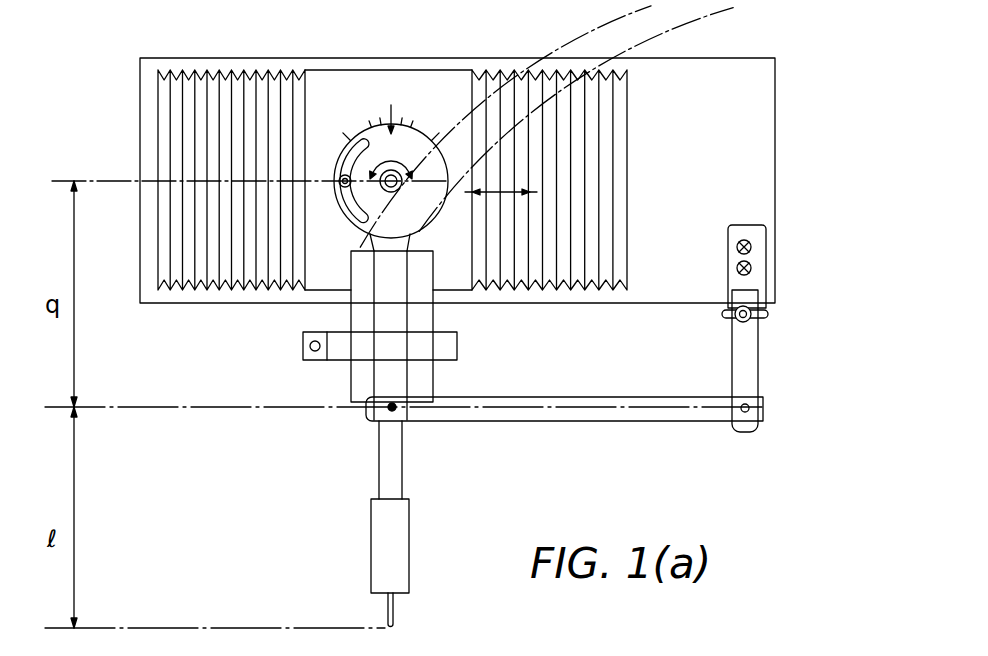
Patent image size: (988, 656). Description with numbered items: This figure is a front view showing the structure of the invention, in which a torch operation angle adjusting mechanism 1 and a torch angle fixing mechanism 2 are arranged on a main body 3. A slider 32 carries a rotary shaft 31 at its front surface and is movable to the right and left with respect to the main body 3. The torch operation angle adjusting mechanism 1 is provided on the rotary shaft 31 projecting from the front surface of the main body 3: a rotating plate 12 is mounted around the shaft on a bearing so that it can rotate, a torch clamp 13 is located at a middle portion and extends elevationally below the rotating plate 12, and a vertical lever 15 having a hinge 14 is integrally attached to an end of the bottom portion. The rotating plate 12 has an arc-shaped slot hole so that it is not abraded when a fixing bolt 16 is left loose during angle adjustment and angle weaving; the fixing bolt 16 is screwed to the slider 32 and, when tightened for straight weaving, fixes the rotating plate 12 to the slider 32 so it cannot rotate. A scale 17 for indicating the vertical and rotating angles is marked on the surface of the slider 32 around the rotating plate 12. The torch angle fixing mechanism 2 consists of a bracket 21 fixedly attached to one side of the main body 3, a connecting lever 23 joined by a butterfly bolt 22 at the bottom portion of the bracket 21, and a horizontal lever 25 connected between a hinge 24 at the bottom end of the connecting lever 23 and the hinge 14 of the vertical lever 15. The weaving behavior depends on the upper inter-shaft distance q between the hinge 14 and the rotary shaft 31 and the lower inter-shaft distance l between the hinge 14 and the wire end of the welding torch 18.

The torch operation angle adjusting mechanism 1 is at (305, 436).
The torch angle fixing mechanism 2 is at (845, 407).
The main body 3 is at (733, 85).
The rotating plate 12 is at (394, 168).
The torch clamp 13 is at (338, 352).
The hinge 14 is at (392, 412).
The vertical lever 15 is at (385, 309).
The fixing bolt 16 is at (339, 177).
The scale 17 is at (362, 138).
The welding torch 18 is at (397, 560).
The bracket 21 is at (758, 233).
The butterfly bolt 22 is at (748, 324).
The connecting lever 23 is at (748, 363).
The hinge 24 is at (749, 408).
The horizontal lever 25 is at (640, 412).
The rotary shaft 31 is at (412, 126).
The slider 32 is at (458, 87).